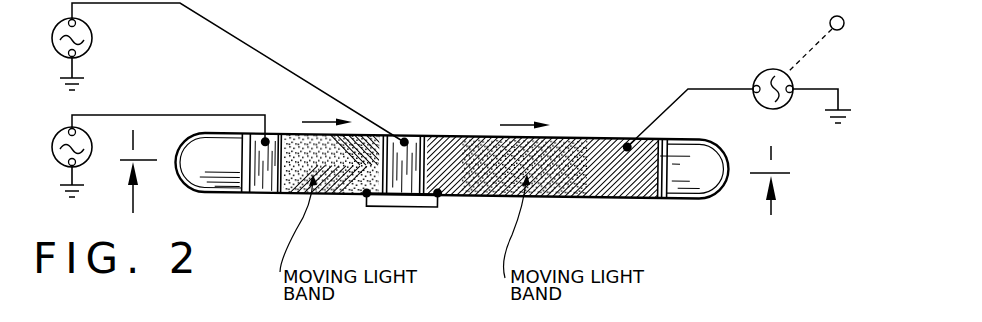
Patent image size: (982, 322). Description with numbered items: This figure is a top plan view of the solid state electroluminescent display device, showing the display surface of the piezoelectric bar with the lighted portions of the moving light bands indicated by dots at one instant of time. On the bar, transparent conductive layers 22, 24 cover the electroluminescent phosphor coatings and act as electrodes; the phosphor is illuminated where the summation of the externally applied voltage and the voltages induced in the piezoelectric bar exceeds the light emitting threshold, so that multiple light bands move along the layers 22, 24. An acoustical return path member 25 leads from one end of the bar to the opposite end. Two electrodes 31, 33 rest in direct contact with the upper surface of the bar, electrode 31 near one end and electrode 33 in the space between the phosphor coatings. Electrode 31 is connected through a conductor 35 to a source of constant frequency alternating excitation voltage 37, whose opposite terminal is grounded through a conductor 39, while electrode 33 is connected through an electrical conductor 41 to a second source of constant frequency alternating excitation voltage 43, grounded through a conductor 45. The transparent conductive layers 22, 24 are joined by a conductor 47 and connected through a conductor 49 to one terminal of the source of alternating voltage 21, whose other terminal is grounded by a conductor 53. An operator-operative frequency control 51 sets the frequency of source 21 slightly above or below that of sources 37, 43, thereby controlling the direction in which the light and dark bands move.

The source of alternating voltage 21 is at (767, 68).
The transparent conductive layer 22 is at (338, 192).
The transparent conductive layer 24 is at (586, 122).
The acoustical return path member 25 is at (203, 192).
The electrode 31 is at (262, 192).
The electrode 33 is at (420, 113).
The conductor 35 is at (168, 117).
The source of constant frequency alternating excitation voltage 37 is at (54, 142).
The conductor 39 is at (65, 175).
The electrical conductor 41 is at (345, 78).
The source of constant frequency alternating excitation voltage 43 is at (92, 30).
The conductor 45 is at (80, 70).
The conductor 47 is at (380, 208).
The conductor 49 is at (670, 108).
The frequency control 51 is at (838, 32).
The conductor 53 is at (840, 95).